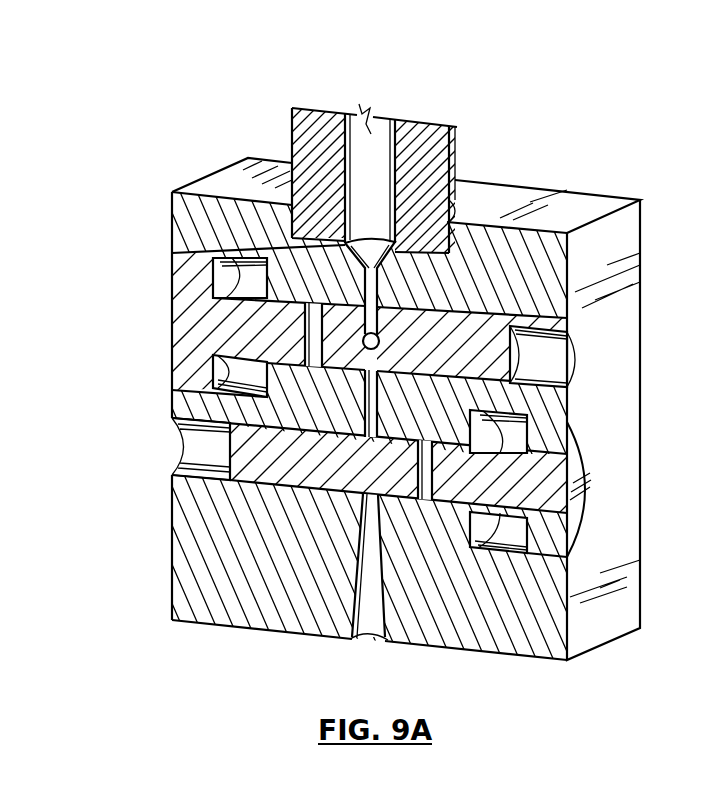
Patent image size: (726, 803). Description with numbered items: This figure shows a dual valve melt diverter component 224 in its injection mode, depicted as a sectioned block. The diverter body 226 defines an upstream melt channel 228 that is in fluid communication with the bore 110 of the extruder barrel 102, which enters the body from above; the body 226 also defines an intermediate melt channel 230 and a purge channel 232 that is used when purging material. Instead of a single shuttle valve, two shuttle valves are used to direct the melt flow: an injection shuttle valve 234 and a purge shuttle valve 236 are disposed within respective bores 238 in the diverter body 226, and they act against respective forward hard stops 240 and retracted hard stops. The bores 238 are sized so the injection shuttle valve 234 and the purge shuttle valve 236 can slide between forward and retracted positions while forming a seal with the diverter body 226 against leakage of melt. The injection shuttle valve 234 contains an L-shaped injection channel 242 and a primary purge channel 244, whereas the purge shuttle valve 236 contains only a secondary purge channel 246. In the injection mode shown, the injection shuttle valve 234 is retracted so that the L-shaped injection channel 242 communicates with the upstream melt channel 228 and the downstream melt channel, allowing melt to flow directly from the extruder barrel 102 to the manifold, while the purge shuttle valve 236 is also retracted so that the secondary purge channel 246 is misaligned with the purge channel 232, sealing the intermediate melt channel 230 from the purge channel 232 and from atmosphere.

The dual valve melt diverter component 224 is at (108, 192).
The diverter body 226 is at (512, 200).
The purge channel 232 is at (370, 578).
The injection shuttle valve 234 is at (196, 322).
The extruder barrel 102 is at (427, 143).
The bore 110 is at (362, 142).
The upstream melt channel 228 is at (378, 292).
The L-shaped injection channel 242 is at (380, 343).
The intermediate melt channel 230 is at (373, 412).
The primary purge channel 244 is at (314, 346).
The secondary purge channel 246 is at (430, 473).
The forward hard stops 240 is at (210, 282).
The bores 238 is at (583, 358).
The purge shuttle valve 236 is at (190, 450).